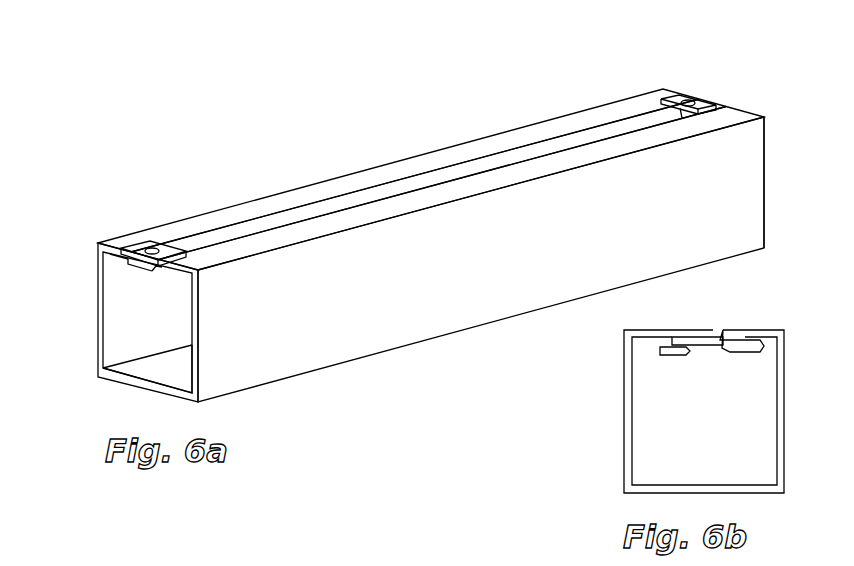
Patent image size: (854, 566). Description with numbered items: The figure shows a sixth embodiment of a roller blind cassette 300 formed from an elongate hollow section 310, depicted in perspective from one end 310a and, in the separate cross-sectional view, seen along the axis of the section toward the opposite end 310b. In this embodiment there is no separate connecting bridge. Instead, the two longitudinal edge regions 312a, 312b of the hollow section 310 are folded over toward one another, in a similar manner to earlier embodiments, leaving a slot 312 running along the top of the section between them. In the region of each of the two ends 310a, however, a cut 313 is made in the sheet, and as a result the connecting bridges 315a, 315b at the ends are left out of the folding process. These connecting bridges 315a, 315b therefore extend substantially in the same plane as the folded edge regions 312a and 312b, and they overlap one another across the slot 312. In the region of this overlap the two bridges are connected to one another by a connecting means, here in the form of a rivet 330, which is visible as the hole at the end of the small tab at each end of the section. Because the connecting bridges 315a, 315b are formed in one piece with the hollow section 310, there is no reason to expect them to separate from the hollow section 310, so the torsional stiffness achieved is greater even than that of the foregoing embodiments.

In FIG. 6A, the rail assembly 300 is at (184, 86).
In FIG. 6A, the hollow section 310 is at (299, 188).
In FIG. 6A, the end 310a is at (194, 354).
In FIG. 6A, the rail end 310b is at (766, 212).
In FIG. 6A, the slot 312 is at (402, 190).
In FIG. 6A, the edge region 312a is at (441, 188).
In FIG. 6B, the edge region 312a is at (746, 338).
In FIG. 6A, the edge region 312b is at (419, 177).
In FIG. 6B, the edge region 312b is at (688, 337).
In FIG. 6A, the cut 313 is at (178, 250).
In FIG. 6A, the connecting bridge 315a is at (136, 265).
In FIG. 6A, the connecting bridge 315b is at (128, 257).
In FIG. 6A, the rivet 330 is at (148, 248).